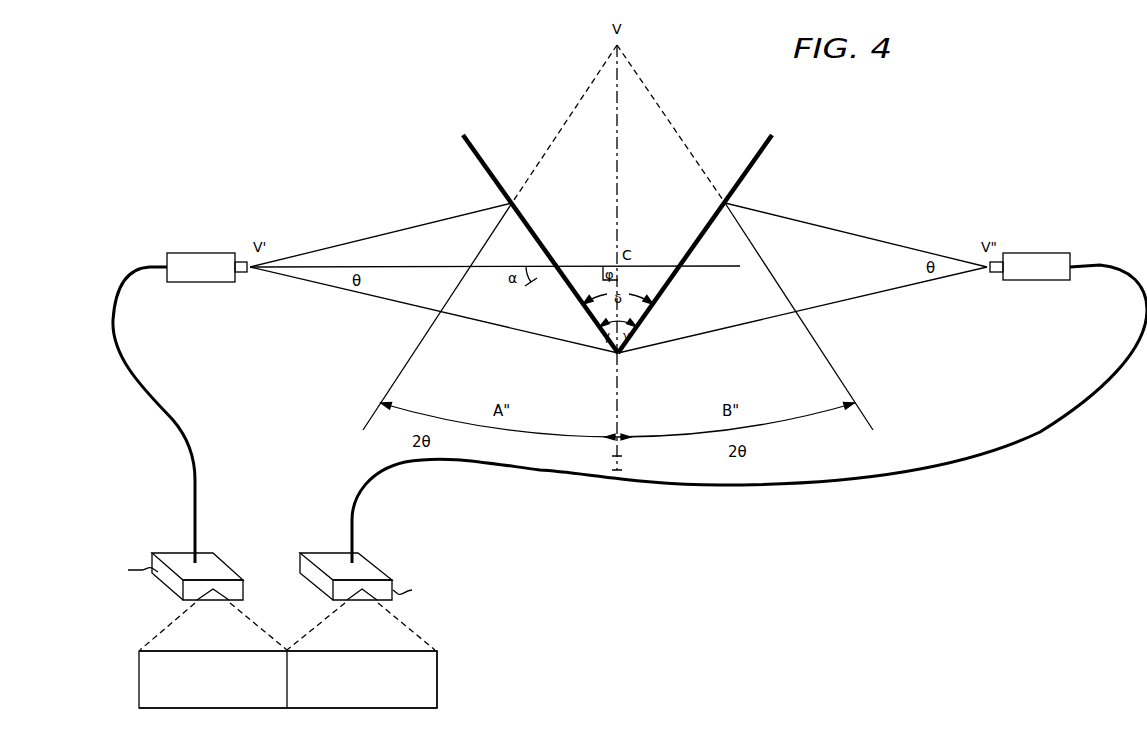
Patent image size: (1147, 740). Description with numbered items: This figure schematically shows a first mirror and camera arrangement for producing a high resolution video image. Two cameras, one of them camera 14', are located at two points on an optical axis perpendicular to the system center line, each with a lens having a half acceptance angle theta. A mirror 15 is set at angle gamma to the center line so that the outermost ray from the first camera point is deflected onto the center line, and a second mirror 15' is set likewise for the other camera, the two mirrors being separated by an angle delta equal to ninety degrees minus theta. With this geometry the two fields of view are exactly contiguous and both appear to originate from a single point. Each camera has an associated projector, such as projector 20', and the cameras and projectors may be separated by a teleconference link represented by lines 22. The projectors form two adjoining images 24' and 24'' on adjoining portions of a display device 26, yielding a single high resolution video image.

The camera 14' is at (201, 243).
The mirror 15 is at (540, 244).
The mirror 15' is at (695, 244).
The projector 20' is at (151, 567).
The teleconference link 22 is at (170, 416).
The image 24' is at (213, 679).
The image 24'' is at (362, 679).
The display device 26 is at (313, 679).